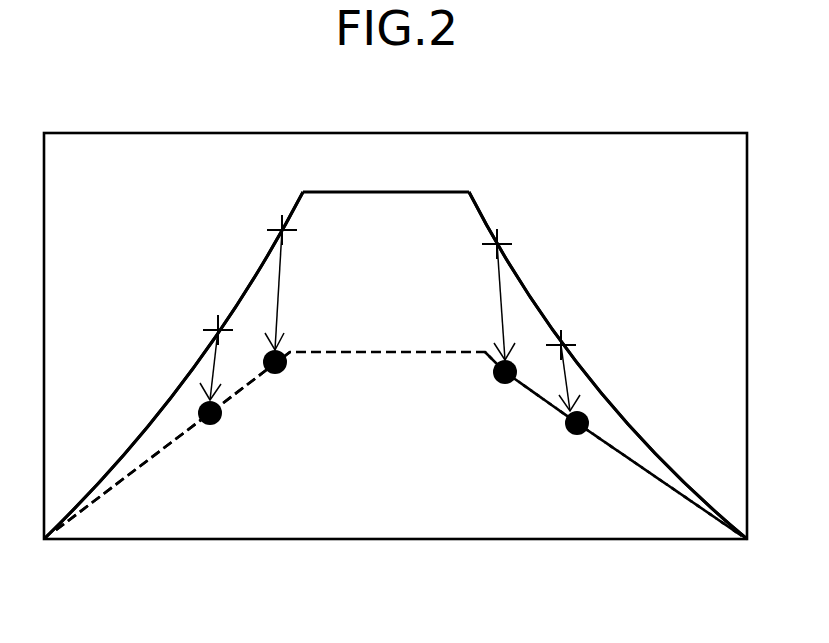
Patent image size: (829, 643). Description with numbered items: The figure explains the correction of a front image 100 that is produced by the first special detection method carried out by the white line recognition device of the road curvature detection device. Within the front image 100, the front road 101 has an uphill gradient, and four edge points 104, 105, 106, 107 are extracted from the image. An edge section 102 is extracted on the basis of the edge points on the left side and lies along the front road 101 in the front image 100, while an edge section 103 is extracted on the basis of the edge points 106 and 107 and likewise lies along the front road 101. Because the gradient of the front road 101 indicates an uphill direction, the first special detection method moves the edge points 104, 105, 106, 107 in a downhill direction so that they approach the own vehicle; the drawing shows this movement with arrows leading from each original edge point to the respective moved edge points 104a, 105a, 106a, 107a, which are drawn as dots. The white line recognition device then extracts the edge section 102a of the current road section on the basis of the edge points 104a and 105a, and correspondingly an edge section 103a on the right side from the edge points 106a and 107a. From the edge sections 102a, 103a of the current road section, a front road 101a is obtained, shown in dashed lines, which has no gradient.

The front image 100 is at (383, 133).
The front road 101 is at (398, 252).
The front road obtained on the basis of corrected edge sections 101a is at (408, 465).
The edge section 102 is at (292, 207).
The edge section 103 is at (477, 202).
The edge section of the current road section 102a is at (162, 448).
The edge section of the current road section 103a is at (640, 463).
The edge point 104 is at (280, 230).
The edge point 105 is at (210, 330).
The edge point 106 is at (508, 242).
The edge point 107 is at (576, 345).
The edge point 104a is at (287, 368).
The edge point 105a is at (222, 420).
The edge point 106a is at (495, 378).
The edge point 107a is at (571, 432).